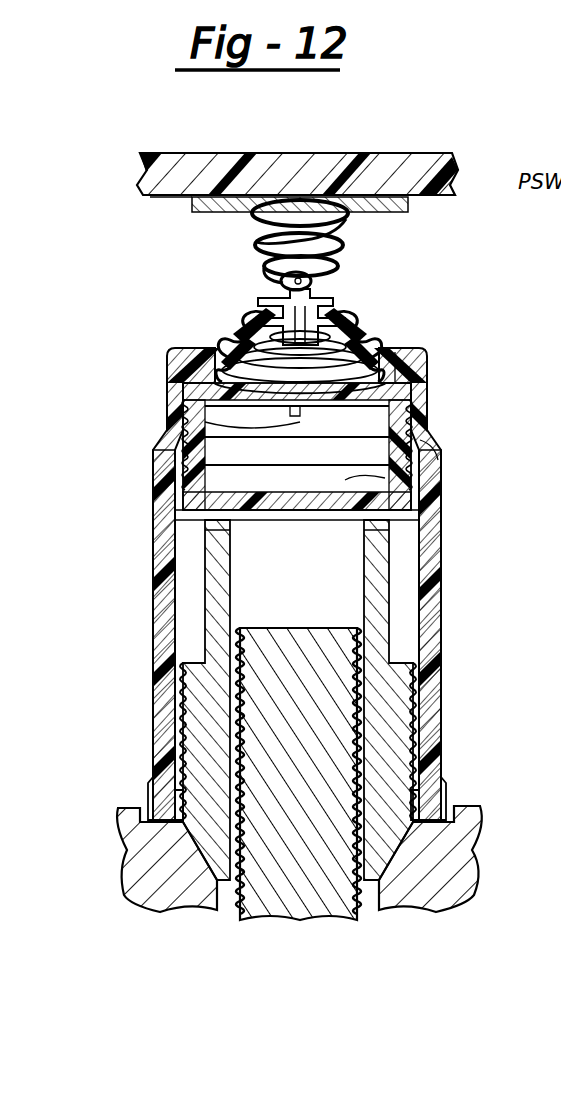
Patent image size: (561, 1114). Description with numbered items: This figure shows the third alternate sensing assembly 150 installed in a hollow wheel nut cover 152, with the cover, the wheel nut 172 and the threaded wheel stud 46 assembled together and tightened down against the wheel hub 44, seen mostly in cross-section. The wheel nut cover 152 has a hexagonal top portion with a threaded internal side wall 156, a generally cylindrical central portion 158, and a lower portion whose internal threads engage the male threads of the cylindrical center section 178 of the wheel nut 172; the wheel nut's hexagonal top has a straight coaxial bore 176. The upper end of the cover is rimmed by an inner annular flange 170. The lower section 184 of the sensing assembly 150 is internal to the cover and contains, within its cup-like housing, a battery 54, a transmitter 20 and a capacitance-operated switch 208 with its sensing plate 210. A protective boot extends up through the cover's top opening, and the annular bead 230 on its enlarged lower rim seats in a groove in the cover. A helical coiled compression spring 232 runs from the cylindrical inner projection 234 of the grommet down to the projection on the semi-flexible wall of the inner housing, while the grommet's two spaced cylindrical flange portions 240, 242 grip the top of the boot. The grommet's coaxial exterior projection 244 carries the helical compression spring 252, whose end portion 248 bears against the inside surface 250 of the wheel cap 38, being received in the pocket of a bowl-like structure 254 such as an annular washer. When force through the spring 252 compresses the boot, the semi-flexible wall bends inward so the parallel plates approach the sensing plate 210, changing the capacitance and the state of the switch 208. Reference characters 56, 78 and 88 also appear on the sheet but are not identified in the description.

The wheel cap 38 is at (180, 167).
The end portion of spring 248 is at (300, 200).
The bowl-like structure 254 is at (396, 200).
The inside surface of wheel cap 250 is at (175, 198).
The helical compression spring 252 is at (255, 243).
The cylindrical inner projection of grommet 234 is at (283, 292).
The cylindrical flange portion 240 is at (340, 300).
The coaxial exterior projection 244 is at (320, 300).
The cylindrical flange portion 242 is at (352, 340).
The helical coiled compression spring 232 is at (185, 368).
The sensing assembly 150 is at (205, 311).
The annular bead 230 is at (427, 377).
The inner annular flange 170 is at (400, 362).
The capacitance-operated switch 208 is at (415, 420).
The sensing plate 210 is at (205, 425).
The transmitter 20 is at (425, 460).
The battery 54 is at (430, 481).
The threaded internal side wall 156 is at (160, 462).
The cylindrical center section of wheel nut 178 is at (413, 752).
The lower section of sensing assembly 184 is at (200, 522).
The wheel nut 172 is at (200, 583).
The cylindrical central portion of cover 158 is at (155, 572).
The straight coaxial bore 176 is at (215, 543).
The wheel stud 46 is at (308, 900).
The wheel nut cover 152 is at (150, 750).
The wheel hub 44 is at (145, 860).
The element 56 is at (545, 138).
The element 78 is at (560, 242).
The element 88 is at (560, 272).